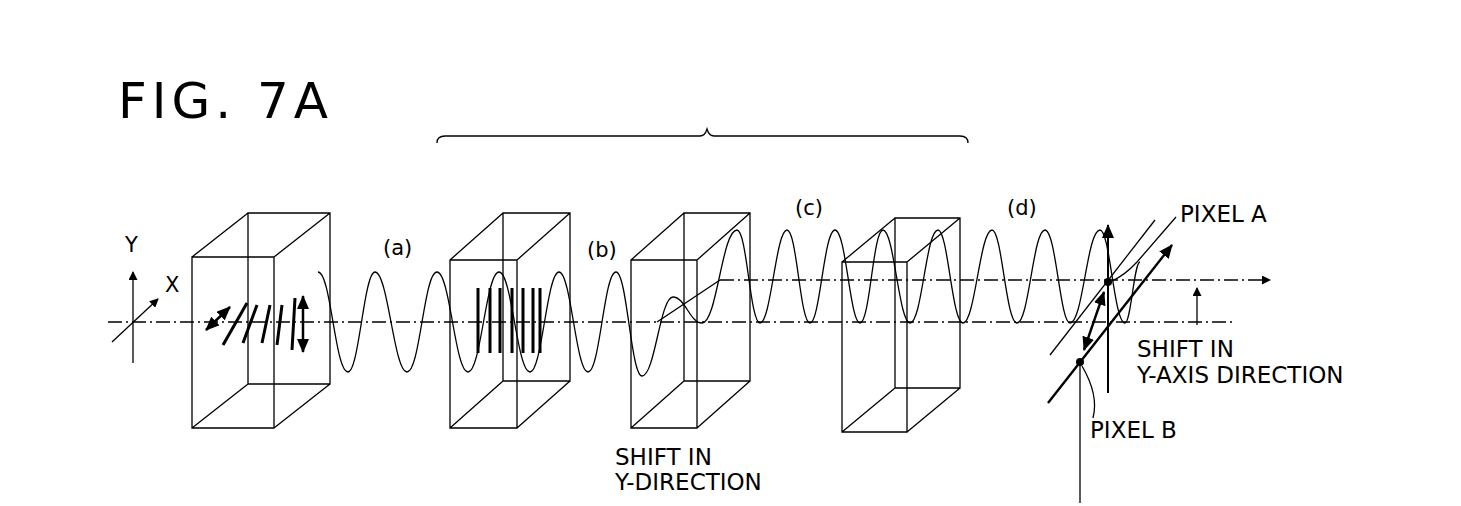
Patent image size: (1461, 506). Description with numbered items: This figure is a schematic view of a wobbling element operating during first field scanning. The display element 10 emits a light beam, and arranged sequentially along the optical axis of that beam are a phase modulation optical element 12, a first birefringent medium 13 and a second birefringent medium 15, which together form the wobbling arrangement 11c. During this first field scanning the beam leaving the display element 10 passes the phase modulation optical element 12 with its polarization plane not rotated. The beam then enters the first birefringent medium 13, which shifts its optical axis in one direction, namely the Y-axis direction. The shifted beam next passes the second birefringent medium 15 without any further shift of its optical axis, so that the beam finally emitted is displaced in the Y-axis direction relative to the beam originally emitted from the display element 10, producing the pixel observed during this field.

The display element 10 is at (230, 219).
The phase modulation optical element 12 is at (482, 215).
The first birefringent medium 13 is at (667, 217).
The second birefringent medium 15 is at (882, 217).
The pixel shifting element 11c is at (702, 120).